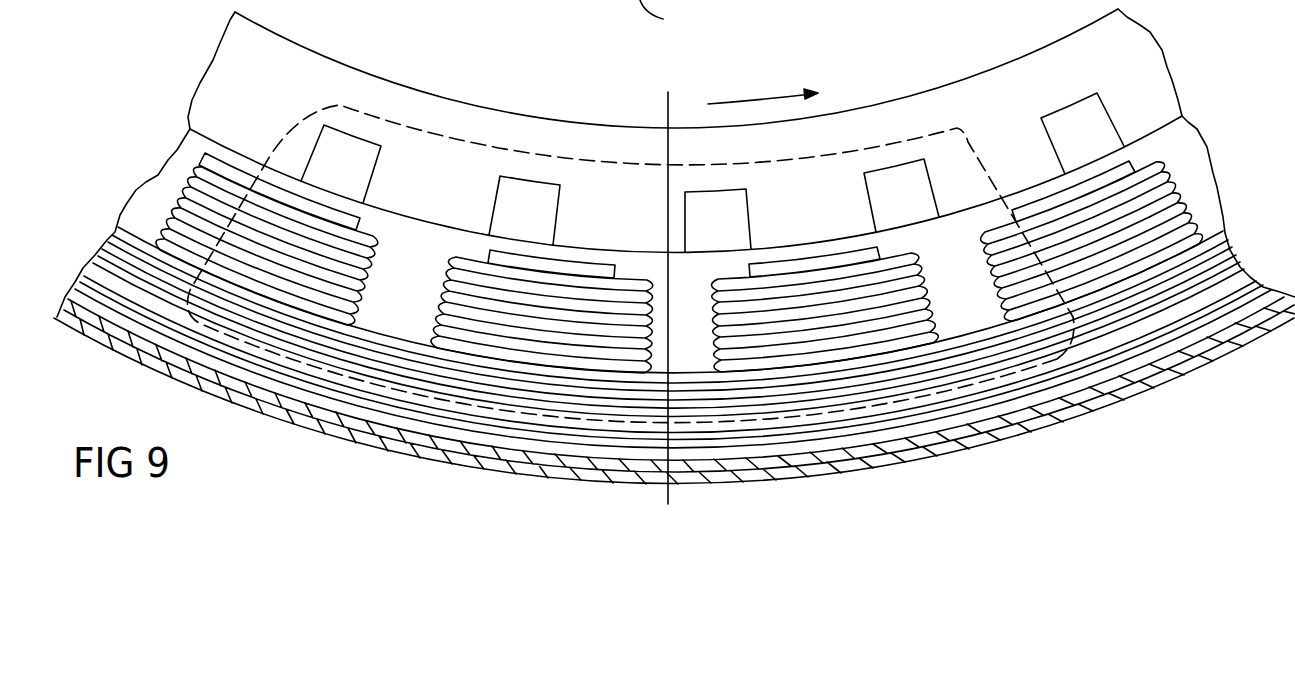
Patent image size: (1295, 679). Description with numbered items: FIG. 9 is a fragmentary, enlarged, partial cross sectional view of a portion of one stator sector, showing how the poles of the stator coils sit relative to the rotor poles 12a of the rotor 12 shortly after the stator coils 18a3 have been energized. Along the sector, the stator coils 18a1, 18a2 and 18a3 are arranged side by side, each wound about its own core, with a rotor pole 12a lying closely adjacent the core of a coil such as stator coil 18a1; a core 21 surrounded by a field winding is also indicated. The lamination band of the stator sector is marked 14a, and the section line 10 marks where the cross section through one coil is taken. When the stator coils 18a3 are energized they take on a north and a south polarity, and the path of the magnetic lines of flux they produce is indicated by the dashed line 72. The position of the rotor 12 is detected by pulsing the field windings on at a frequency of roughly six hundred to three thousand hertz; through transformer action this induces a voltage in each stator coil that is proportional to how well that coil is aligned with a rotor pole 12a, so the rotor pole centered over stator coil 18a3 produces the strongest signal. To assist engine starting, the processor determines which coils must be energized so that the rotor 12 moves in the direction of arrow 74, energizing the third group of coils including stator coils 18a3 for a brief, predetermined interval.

The section line 10- 10 is at (626, 92).
The rotor 12 is at (413, 89).
The rotor pole 12a is at (381, 226).
The lamination stack / slot wedge band 14a is at (328, 432).
The stator coil 18a1 is at (443, 318).
The stator coil 18a2 is at (912, 302).
The stator coil 18a3 is at (1232, 167).
The core 21 is at (663, 19).
The dashed line indicating path of magnetic lines of flux 72 is at (969, 138).
The arrow 74 is at (744, 100).